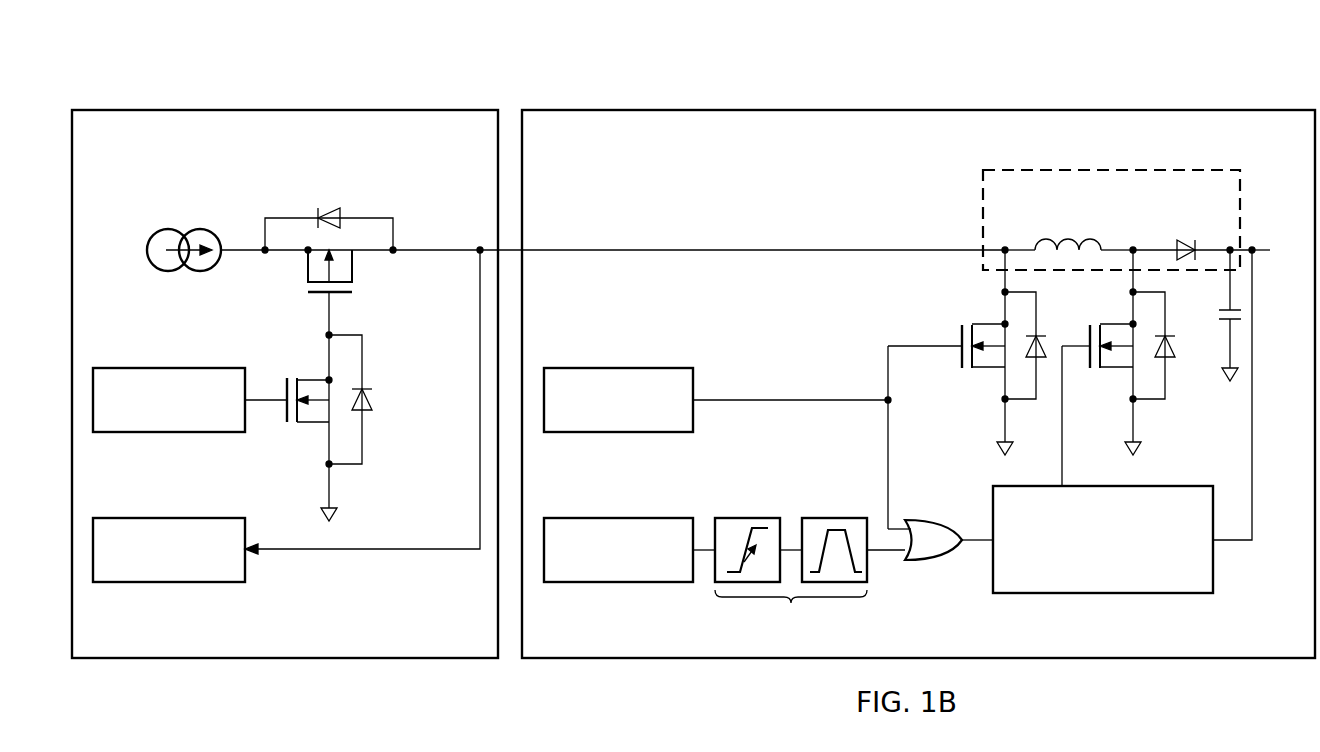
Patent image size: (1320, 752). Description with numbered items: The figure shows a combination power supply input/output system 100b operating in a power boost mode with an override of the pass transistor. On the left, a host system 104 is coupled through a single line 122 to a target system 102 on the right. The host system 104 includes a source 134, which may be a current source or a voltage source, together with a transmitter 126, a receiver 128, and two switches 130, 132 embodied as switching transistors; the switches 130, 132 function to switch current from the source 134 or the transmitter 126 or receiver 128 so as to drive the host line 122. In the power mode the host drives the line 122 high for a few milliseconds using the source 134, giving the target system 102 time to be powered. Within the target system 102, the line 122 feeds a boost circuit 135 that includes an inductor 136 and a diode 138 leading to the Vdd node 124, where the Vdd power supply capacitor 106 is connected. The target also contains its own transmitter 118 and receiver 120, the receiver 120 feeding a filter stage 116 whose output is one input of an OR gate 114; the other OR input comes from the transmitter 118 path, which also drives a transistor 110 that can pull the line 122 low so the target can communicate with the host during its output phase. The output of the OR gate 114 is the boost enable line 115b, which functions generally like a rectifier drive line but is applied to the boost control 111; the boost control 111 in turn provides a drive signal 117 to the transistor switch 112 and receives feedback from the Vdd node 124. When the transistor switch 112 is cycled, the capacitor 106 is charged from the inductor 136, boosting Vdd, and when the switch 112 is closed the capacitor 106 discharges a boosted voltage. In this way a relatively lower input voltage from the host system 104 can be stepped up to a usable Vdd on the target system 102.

The system 100b is at (412, 85).
The host system 104 is at (178, 108).
The target system 102 is at (1080, 108).
The source 134 is at (170, 230).
The switch 130 is at (375, 207).
The switch 132 is at (388, 412).
The transmitter 126 is at (170, 433).
The receiver 128 is at (170, 583).
The line 122 is at (641, 248).
The boost circuit 135 is at (1138, 168).
The inductor 136 is at (1078, 230).
The diode 138 is at (1190, 240).
The supply voltage node Vdd 124 is at (1260, 248).
The capacitor 106 is at (1218, 313).
The target transmit transistor 110 is at (965, 378).
The transistor switch 112 is at (1113, 378).
The drive signal 117 is at (1062, 462).
The target transmitter 118 is at (618, 433).
The target receiver 120 is at (618, 583).
The filter circuit 116 is at (810, 576).
The OR gate 114 is at (928, 565).
The boost enable line 115b is at (977, 545).
The boost control 111 is at (1105, 594).